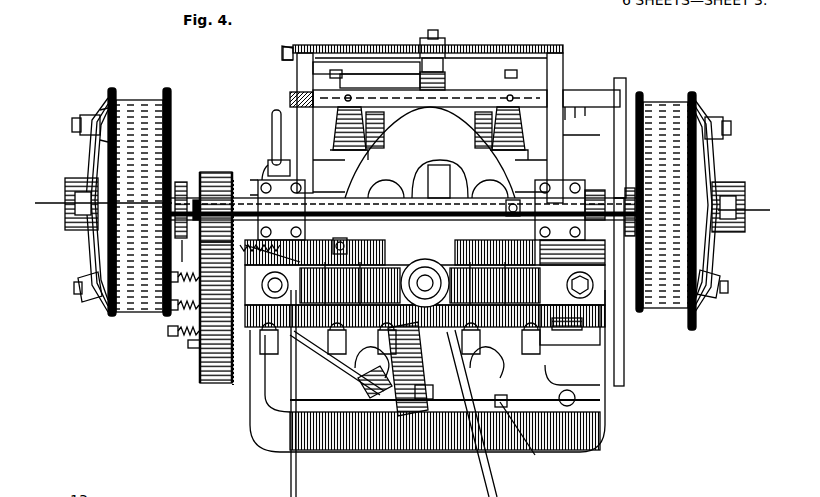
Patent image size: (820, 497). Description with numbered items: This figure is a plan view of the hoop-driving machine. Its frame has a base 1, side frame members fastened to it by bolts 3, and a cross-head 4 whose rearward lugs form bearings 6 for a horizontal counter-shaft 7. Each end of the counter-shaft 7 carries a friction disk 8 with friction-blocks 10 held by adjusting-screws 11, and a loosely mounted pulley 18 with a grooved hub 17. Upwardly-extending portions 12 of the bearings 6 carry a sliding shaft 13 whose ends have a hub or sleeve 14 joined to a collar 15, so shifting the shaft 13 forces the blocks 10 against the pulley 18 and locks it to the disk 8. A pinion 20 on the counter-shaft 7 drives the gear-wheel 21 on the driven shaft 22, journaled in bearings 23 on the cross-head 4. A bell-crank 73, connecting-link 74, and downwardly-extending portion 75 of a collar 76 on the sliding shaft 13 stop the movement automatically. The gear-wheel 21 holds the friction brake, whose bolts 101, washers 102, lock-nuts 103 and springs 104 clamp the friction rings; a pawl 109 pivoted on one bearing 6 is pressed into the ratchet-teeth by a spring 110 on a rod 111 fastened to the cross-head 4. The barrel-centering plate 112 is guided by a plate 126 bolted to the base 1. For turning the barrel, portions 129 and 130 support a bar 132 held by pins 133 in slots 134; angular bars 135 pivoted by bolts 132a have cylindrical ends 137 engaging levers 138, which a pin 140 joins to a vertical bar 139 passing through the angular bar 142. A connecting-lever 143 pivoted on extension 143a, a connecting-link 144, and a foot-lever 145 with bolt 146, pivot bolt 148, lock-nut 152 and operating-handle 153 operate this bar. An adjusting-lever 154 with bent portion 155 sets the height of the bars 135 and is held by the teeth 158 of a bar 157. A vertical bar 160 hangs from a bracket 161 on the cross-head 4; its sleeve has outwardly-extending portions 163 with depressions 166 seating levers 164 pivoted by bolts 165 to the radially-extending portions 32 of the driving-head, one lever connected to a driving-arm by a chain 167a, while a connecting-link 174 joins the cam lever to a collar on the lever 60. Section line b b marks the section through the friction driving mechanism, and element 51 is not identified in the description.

The base 1 is at (427, 371).
The bolts 3 is at (565, 325).
The top piece or cross-head 4 is at (515, 282).
The bearings 6 is at (252, 190).
The counter-shaft 7 is at (68, 192).
The disk 8 is at (95, 150).
The friction-blocks 10 is at (88, 290).
The adjusting-screws 11 is at (80, 124).
The upwardly-extending portions 12 is at (421, 210).
The sliding shaft 13 is at (388, 198).
The hub or sleeve 14 is at (181, 182).
The collar 15 is at (187, 250).
The hub 17 is at (606, 200).
The pulley 18 is at (402, 201).
The pinion 20 is at (215, 172).
The gear-wheel 21 is at (217, 384).
The driven shaft 22 is at (425, 283).
The bearings 23 is at (370, 282).
The radially-extending portions 32 is at (498, 184).
The arch support 51 is at (429, 269).
The lever 60 is at (494, 488).
The bell-crank 73 is at (419, 271).
The connecting-link 74 is at (432, 262).
The downwardly-extending portion 75 is at (481, 283).
The collar 76 is at (431, 215).
The bolts 101 is at (183, 268).
The washers 102 is at (190, 337).
The lock-nuts 103 is at (168, 331).
The spiral springs 104 is at (196, 350).
The pawl 109 is at (284, 280).
The spiral spring 110 is at (270, 245).
The rod 111 is at (335, 282).
The metal plate 112 is at (430, 152).
The plate 126 is at (571, 385).
The upwardly and rearwardly extending portion 129 is at (349, 159).
The upwardly and rearwardly extending portion 130 is at (492, 140).
The horizontally-extending bar 132 is at (430, 98).
The bolts 132a is at (290, 100).
The pins 133 is at (442, 98).
The slots 134 is at (348, 95).
The angular bars 135 is at (297, 72).
The cylindrical-shaped ends 137 is at (312, 45).
The levers 138 is at (431, 43).
The vertically-extending bar 139 is at (445, 60).
The pin 140 is at (437, 33).
The angular-shaped bar 142 is at (448, 79).
The connecting-lever 143 is at (402, 62).
The extension 143a is at (380, 78).
The connecting-link 144 is at (295, 47).
The foot-lever 145 is at (297, 476).
The bolt 146 is at (283, 53).
The bolt 148 is at (268, 178).
The lock-nut 152 is at (290, 170).
The operating-handle 153 is at (272, 124).
The adjusting-lever 154 is at (624, 372).
The bent portion 155 is at (635, 131).
The bar 157 is at (572, 252).
The teeth 158 is at (571, 279).
The vertically-extending bar 160 is at (392, 450).
The bracket 161 is at (407, 359).
The outwardly-extending portions 163 is at (445, 434).
The levers 164 is at (531, 438).
The bolts 165 is at (455, 455).
The depressions 166 is at (358, 388).
The chain 167a is at (330, 358).
The connecting-link 174 is at (515, 399).
The section line b b is at (399, 210).